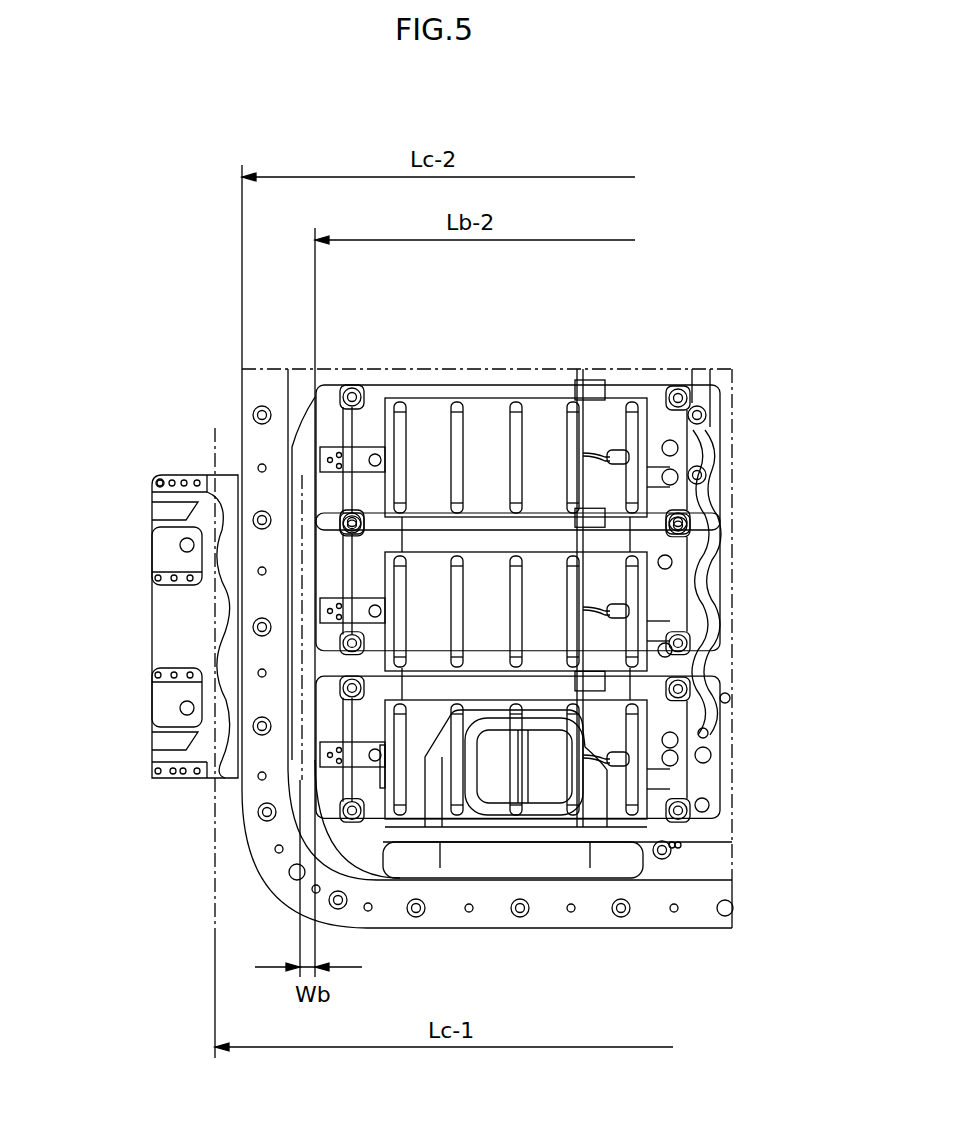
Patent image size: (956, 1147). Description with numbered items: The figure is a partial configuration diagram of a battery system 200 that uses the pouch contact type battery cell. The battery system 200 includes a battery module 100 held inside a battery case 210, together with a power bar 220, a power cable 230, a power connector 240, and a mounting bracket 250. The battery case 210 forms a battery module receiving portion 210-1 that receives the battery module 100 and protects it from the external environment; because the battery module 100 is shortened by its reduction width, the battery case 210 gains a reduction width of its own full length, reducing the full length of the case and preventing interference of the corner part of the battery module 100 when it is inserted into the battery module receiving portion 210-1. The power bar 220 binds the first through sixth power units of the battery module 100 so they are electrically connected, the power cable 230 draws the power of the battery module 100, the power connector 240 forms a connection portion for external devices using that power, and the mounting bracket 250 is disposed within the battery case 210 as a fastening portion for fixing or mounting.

The battery module 100 is at (540, 437).
The battery system 200 is at (168, 437).
The battery case 210 is at (263, 440).
The battery module receiving portion 210-1 is at (315, 506).
The power bar 220 is at (360, 455).
The power cable 230 is at (705, 635).
The power connector 240 is at (552, 772).
The mounting bracket 250 is at (168, 703).